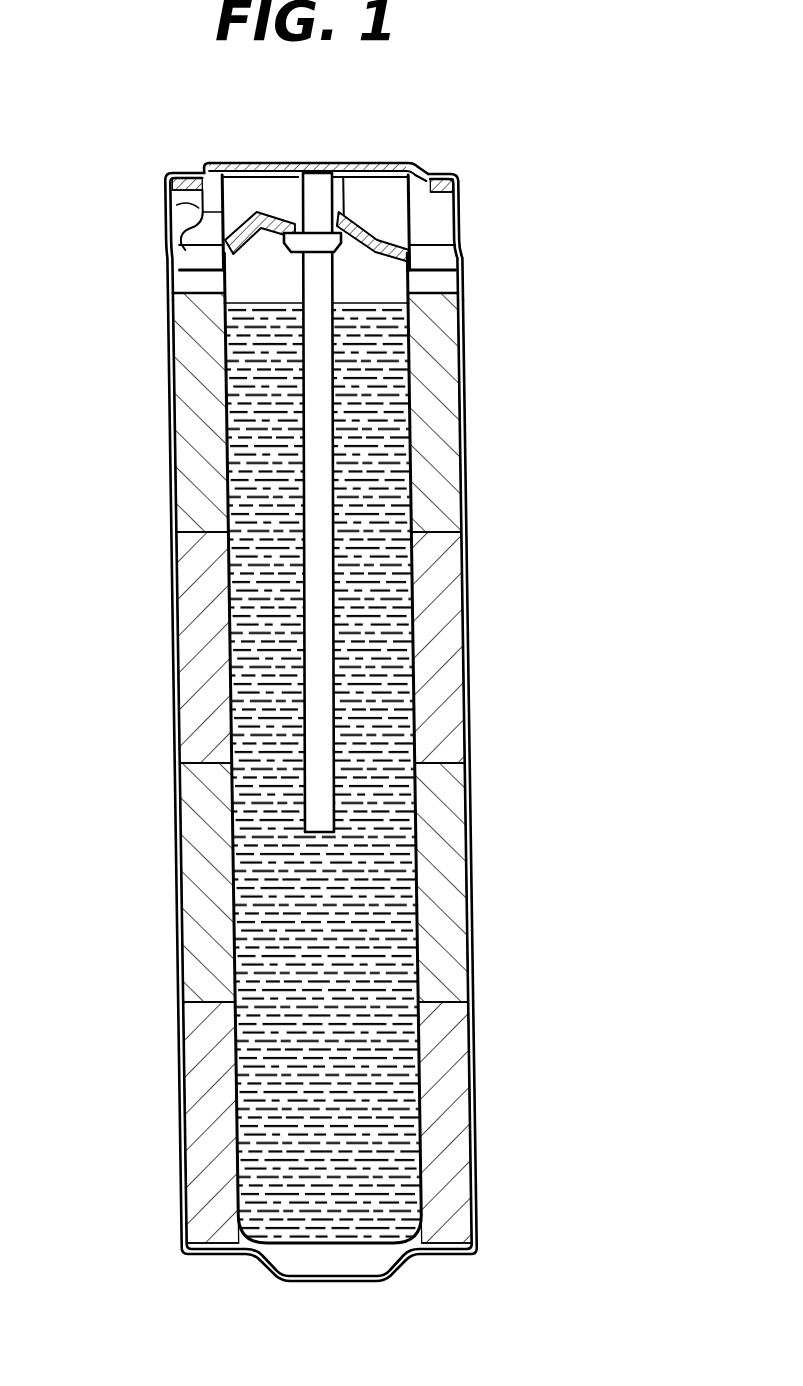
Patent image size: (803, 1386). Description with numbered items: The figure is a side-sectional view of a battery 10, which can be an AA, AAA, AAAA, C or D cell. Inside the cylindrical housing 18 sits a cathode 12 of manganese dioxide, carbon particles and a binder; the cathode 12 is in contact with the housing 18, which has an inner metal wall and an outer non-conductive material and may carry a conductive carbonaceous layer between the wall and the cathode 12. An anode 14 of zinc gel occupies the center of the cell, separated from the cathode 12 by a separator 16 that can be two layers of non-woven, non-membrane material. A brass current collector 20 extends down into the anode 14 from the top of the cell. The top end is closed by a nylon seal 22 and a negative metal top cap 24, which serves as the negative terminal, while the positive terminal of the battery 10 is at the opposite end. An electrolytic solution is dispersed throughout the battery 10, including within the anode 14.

The battery 10 is at (582, 243).
The cathode 12 is at (447, 385).
The anode 14 is at (383, 858).
The separator 16 is at (225, 693).
The cylindrical housing 18 is at (173, 497).
The current collector 20 is at (322, 643).
The seal 22 is at (212, 253).
The negative metal top cap 24 is at (412, 162).